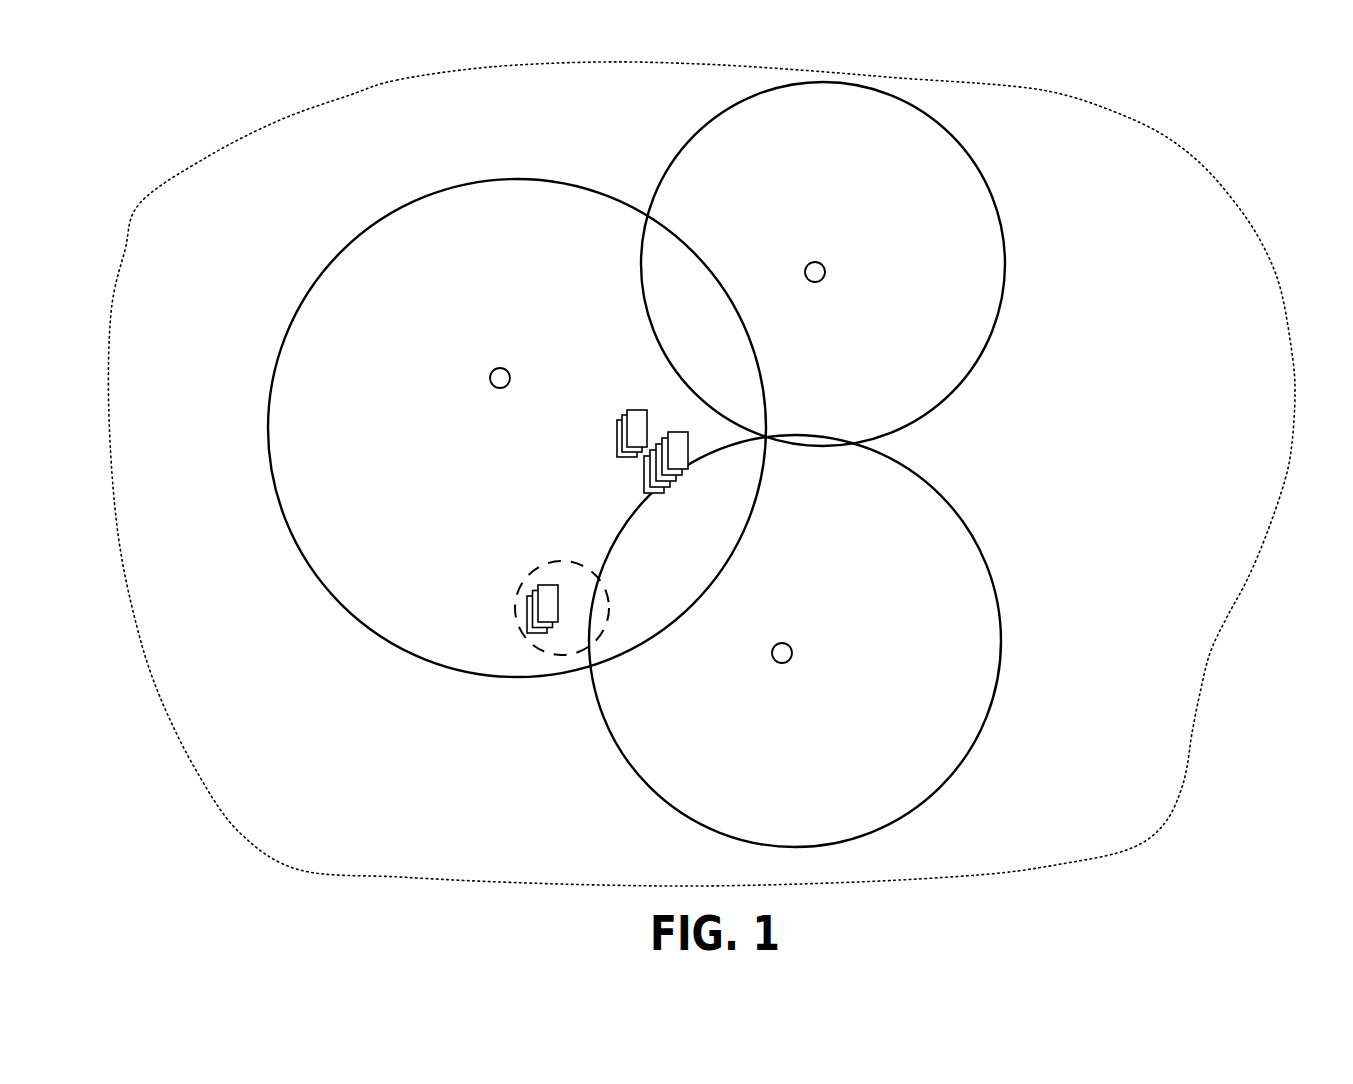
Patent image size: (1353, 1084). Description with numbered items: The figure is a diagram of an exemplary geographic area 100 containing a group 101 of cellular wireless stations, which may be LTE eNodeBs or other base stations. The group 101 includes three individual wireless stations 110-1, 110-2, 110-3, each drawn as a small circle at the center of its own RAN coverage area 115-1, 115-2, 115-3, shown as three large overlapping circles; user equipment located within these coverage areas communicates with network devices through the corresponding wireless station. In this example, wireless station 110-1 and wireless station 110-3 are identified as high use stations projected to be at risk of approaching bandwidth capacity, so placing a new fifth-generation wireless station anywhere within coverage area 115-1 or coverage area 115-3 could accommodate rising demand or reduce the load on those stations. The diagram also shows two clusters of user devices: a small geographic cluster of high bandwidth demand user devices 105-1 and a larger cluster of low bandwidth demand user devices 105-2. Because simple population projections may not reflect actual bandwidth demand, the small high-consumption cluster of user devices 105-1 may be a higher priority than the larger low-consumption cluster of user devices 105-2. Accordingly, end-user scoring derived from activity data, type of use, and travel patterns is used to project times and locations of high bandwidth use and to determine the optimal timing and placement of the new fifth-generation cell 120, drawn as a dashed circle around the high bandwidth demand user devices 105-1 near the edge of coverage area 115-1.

The geographic area 100 is at (397, 80).
The group of wireless stations 101 is at (1090, 438).
The user devices with high bandwidth consumption 105-1 is at (550, 628).
The user devices with low bandwidth consumption 105-2 is at (615, 407).
The wireless station 110-1 is at (500, 388).
The wireless station 110-2 is at (815, 262).
The wireless station 110-3 is at (782, 663).
The coverage area 115-1 is at (314, 283).
The coverage area 115-2 is at (1004, 250).
The coverage area 115-3 is at (1001, 647).
The new 5G cell 120 is at (517, 613).